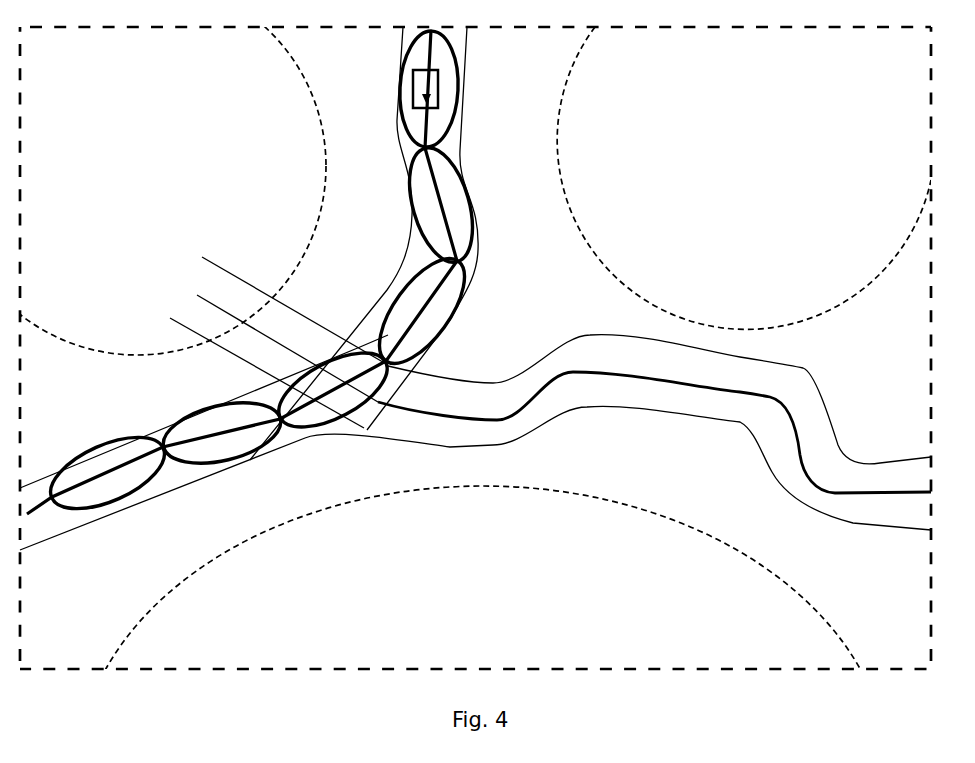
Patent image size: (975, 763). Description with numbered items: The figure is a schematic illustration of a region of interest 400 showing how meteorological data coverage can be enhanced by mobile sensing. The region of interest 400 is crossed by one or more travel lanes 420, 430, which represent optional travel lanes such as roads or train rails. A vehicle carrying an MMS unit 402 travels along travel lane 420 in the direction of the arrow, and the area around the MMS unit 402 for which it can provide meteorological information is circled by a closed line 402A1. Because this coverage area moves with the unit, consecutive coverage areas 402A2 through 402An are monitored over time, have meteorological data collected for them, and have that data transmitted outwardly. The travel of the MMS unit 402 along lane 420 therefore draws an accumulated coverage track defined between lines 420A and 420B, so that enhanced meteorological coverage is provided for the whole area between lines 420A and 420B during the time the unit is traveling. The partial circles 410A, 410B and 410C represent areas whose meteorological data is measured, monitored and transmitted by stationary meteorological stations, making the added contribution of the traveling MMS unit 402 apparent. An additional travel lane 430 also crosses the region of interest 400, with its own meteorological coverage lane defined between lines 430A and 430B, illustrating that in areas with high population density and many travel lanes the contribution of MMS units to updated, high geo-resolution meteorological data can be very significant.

The region of interest 400 is at (882, 590).
The MMS unit 402 is at (413, 88).
The closed line 402A1 is at (455, 128).
The consecutive coverage area 402A2 is at (473, 248).
The consecutive coverage area 402An is at (141, 496).
The partial circle 410A is at (497, 601).
The partial circle 410B is at (780, 139).
The partial circle 410C is at (164, 155).
The travel lane 420 is at (440, 201).
The line 420A is at (402, 53).
The line 420B is at (460, 120).
The travel lane 430 is at (862, 492).
The line 430A is at (829, 405).
The line 430B is at (718, 419).